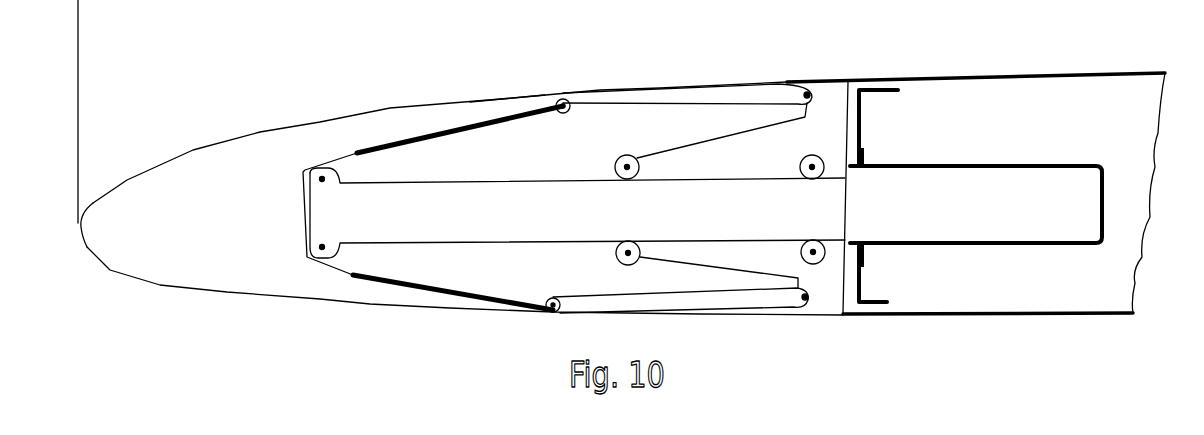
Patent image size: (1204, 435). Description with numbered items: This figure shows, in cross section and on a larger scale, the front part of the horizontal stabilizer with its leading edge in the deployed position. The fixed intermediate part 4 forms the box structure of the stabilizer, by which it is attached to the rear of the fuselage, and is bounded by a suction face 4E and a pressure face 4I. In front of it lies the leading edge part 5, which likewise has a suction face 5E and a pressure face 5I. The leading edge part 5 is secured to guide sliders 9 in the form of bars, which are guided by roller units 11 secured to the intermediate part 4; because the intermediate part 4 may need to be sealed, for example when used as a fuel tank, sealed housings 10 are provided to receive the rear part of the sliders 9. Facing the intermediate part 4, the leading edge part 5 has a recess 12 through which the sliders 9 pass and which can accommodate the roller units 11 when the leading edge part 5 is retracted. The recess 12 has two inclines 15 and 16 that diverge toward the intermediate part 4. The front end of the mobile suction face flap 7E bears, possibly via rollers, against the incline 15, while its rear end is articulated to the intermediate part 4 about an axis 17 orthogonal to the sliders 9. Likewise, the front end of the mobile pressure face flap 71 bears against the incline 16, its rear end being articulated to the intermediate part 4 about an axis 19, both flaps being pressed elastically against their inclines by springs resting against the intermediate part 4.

The intermediate part 4 is at (976, 202).
The suction face 4E is at (970, 73).
The pressure face 4I is at (978, 315).
The leading edge part 5 is at (462, 209).
The suction face 5E is at (405, 107).
The pressure face 5I is at (408, 307).
The mobile suction face flap 7E is at (648, 95).
The mobile pressure face flap 71 is at (698, 305).
The guide sliders 9 is at (512, 218).
The sealed housings 10 is at (1040, 190).
The roller units 11 is at (756, 145).
The recess 12 is at (512, 108).
The incline 15 is at (420, 135).
The incline 16 is at (407, 287).
The axis 17 is at (826, 95).
The axis 19 is at (813, 313).